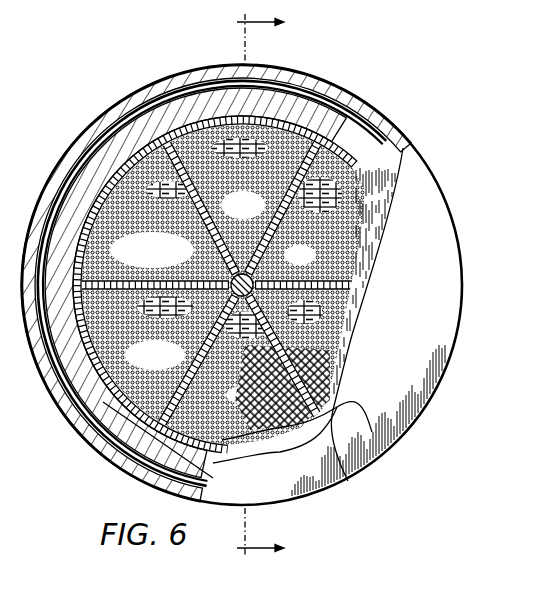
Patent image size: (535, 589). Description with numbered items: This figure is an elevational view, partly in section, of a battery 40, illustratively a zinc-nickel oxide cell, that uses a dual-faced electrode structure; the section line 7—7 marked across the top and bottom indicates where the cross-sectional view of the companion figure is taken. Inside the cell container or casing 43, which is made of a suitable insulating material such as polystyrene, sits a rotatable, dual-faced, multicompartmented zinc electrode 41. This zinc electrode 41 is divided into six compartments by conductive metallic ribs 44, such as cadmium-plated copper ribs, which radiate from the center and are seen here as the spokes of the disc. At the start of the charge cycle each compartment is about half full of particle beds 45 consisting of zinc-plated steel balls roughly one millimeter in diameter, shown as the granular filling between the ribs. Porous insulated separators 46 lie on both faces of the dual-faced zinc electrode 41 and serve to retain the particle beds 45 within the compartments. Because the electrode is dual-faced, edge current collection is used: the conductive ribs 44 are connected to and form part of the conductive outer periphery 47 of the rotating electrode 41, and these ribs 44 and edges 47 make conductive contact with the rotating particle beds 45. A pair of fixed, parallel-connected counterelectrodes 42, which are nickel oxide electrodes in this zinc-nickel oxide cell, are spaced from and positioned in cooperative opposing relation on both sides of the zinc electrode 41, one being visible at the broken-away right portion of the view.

The section line 7— 7 is at (269, 286).
The battery 40 is at (362, 101).
The zinc electrode 41 is at (113, 165).
The counterelectrodes 42 is at (370, 436).
The cell container or casing 43 is at (108, 461).
The conductive metallic ribs 44 is at (148, 292).
The particle beds 45 is at (257, 216).
The porous insulated separators 46 is at (349, 481).
The conductive outer periphery 47 is at (113, 393).